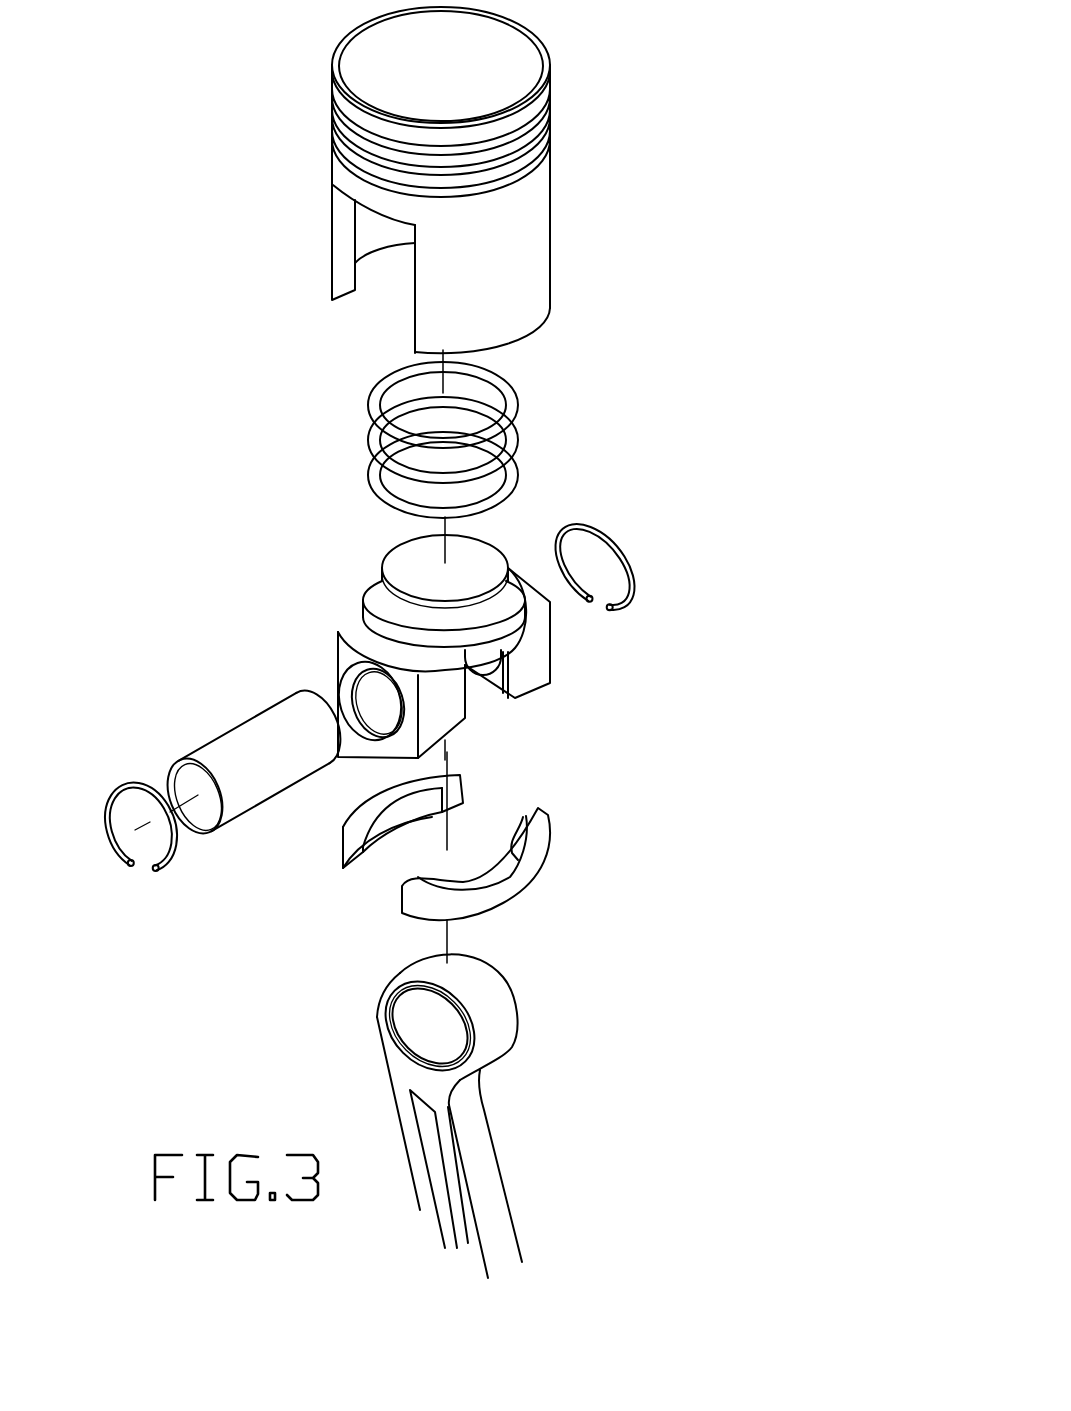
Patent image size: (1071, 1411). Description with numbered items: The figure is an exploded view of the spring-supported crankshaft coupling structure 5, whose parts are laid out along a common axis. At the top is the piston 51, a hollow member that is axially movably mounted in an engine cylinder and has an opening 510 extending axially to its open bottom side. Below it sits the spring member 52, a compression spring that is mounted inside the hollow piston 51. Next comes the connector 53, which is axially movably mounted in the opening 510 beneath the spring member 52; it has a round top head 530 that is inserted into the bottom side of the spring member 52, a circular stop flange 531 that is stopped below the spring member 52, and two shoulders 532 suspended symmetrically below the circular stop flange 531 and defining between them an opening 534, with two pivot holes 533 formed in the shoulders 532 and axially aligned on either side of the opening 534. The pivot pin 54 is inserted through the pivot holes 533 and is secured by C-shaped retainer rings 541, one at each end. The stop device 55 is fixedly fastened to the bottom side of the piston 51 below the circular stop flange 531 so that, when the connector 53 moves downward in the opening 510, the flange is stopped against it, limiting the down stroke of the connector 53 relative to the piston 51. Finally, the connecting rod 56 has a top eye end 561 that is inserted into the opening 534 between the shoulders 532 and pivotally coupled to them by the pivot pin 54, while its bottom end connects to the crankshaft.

The spring-supported crankshaft coupling structure 5 is at (667, 252).
The piston 51 is at (474, 176).
The opening 510 is at (388, 278).
The spring member 52 is at (512, 383).
The connector 53 is at (588, 672).
The round top head 530 is at (485, 563).
The circular stop flange 531 is at (580, 647).
The shoulders 532 is at (528, 675).
The pivot holes 533 is at (378, 692).
The opening 534 is at (482, 705).
The pivot pin 54 is at (256, 735).
The C-shaped retainer rings 541 is at (612, 533).
The stop device 55 is at (538, 870).
The connecting rod 56 is at (529, 1115).
The top eye end 561 is at (497, 1010).